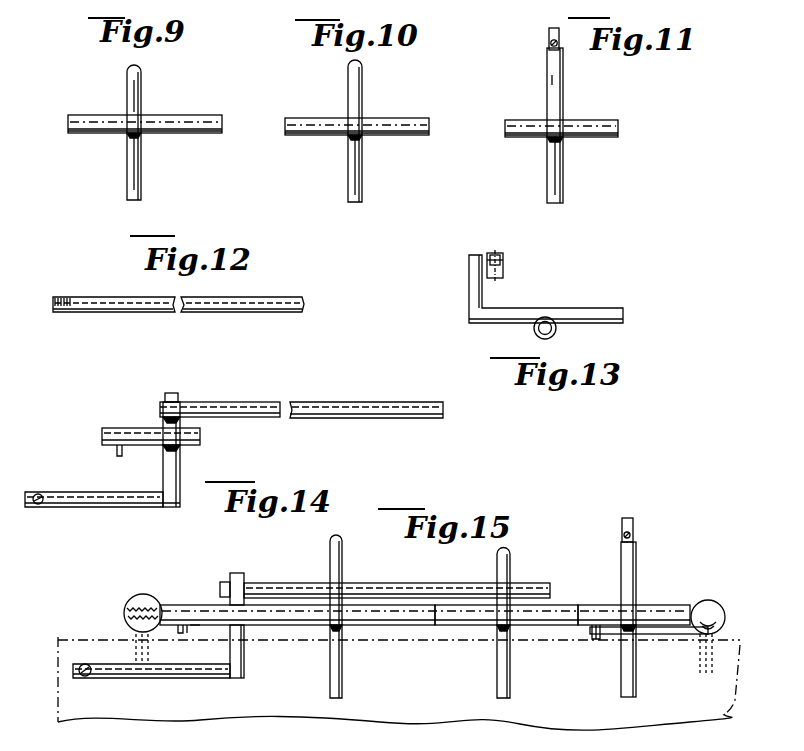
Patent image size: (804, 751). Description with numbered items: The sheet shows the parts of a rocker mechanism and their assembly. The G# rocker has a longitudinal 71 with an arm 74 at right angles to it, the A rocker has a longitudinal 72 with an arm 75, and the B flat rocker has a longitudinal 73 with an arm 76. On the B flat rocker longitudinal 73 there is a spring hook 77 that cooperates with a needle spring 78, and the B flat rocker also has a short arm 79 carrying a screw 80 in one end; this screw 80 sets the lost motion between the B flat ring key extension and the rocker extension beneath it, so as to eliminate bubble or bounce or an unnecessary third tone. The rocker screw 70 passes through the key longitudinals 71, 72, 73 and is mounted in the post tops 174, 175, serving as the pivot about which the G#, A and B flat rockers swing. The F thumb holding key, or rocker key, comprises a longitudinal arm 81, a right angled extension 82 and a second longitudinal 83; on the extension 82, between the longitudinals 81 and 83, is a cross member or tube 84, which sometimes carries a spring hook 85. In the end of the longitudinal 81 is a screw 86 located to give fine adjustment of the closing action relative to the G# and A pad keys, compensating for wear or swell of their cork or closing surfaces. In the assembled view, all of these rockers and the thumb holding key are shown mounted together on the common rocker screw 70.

In FIG. 15, the rocker screw 70 is at (395, 602).
In FIG. 9, the longitudinal of G# rocker 71 is at (192, 128).
In FIG. 15, the longitudinal of G# rocker 71 is at (312, 618).
In FIG. 10, the longitudinal of A rocker 72 is at (392, 130).
In FIG. 15, the longitudinal of A rocker 72 is at (458, 622).
In FIG. 11, the longitudinal of B flat rocker 73 is at (584, 132).
In FIG. 13, the longitudinal of B flat rocker 73 is at (535, 331).
In FIG. 15, the longitudinal of B flat rocker 73 is at (592, 622).
In FIG. 9, the arm of G# rocker 74 is at (133, 95).
In FIG. 15, the arm of G# rocker 74 is at (342, 674).
In FIG. 10, the arm of A rocker 75 is at (356, 92).
In FIG. 15, the arm of A rocker 75 is at (510, 666).
In FIG. 11, the arm of B flat rocker 76 is at (556, 86).
In FIG. 13, the arm of B flat rocker 76 is at (582, 318).
In FIG. 15, the arm of B flat rocker 76 is at (628, 564).
In FIG. 15, the spring hook 77 is at (594, 642).
In FIG. 15, the needle spring 78 is at (656, 640).
In FIG. 11, the short arm 79 is at (559, 36).
In FIG. 13, the short arm 79 is at (503, 264).
In FIG. 15, the short arm 79 is at (634, 528).
In FIG. 11, the screw 80 is at (550, 43).
In FIG. 13, the screw 80 is at (492, 256).
In FIG. 15, the screw 80 is at (624, 534).
In FIG. 14, the longitudinal arm of F thumb holding key 81 is at (119, 501).
In FIG. 15, the longitudinal arm of F thumb holding key 81 is at (205, 676).
In FIG. 14, the right angled extension 82 is at (180, 460).
In FIG. 15, the right angled extension 82 is at (242, 652).
In FIG. 14, the second longitudinal 83 is at (326, 414).
In FIG. 15, the second longitudinal 83 is at (454, 598).
In FIG. 14, the cross member or tube 84 is at (135, 430).
In FIG. 15, the cross member or tube 84 is at (203, 614).
In FIG. 14, the spring hook 85 is at (117, 455).
In FIG. 15, the spring hook 85 is at (190, 628).
In FIG. 14, the screw 86 is at (40, 504).
In FIG. 15, the screw 86 is at (87, 674).
In FIG. 15, the post top 174 is at (138, 597).
In FIG. 15, the post top 175 is at (710, 608).